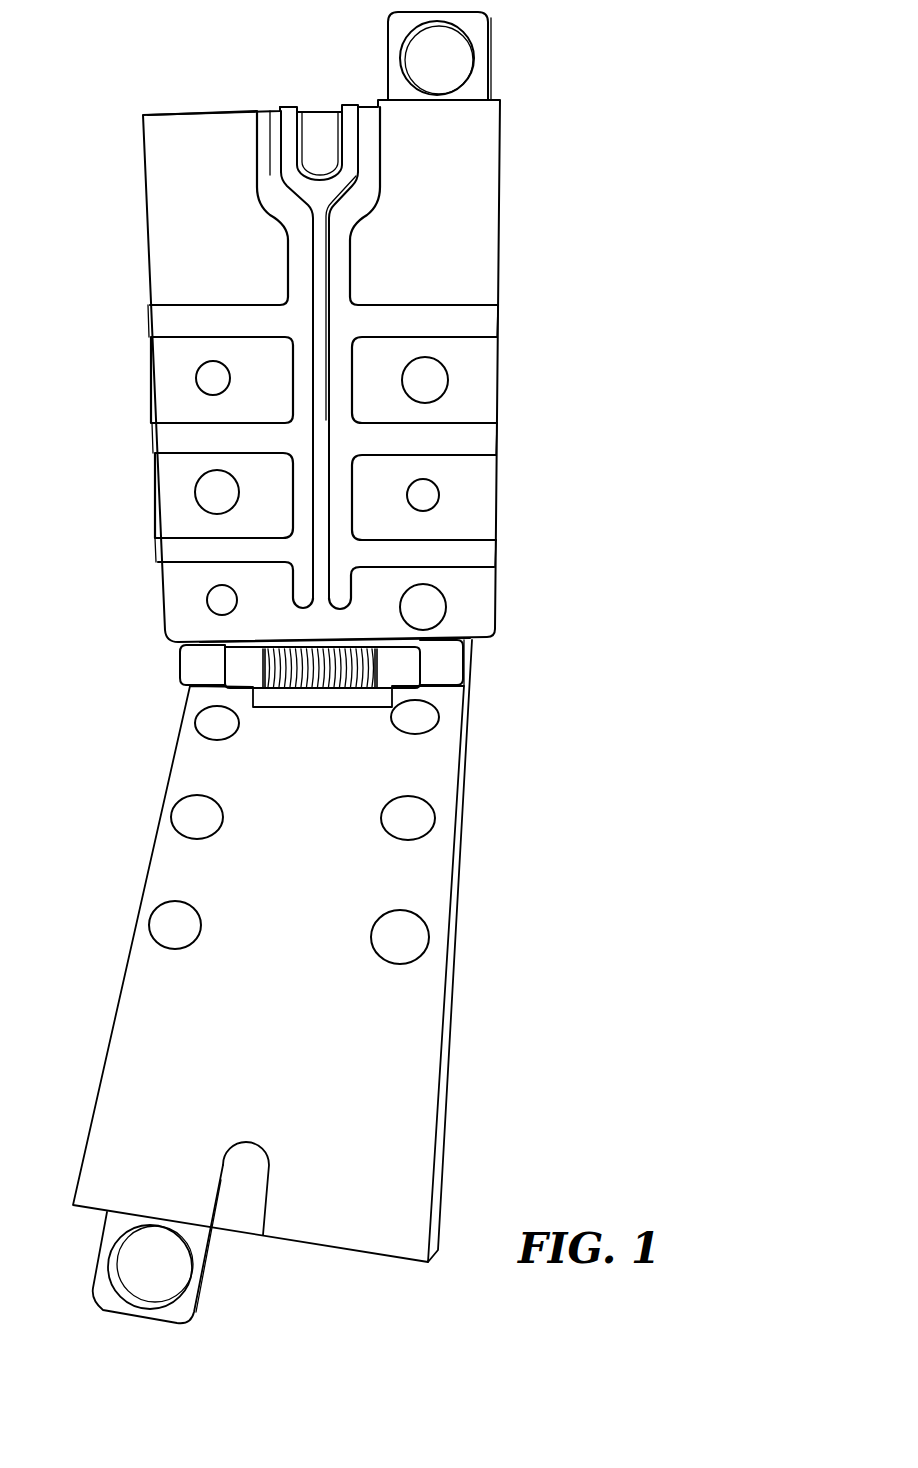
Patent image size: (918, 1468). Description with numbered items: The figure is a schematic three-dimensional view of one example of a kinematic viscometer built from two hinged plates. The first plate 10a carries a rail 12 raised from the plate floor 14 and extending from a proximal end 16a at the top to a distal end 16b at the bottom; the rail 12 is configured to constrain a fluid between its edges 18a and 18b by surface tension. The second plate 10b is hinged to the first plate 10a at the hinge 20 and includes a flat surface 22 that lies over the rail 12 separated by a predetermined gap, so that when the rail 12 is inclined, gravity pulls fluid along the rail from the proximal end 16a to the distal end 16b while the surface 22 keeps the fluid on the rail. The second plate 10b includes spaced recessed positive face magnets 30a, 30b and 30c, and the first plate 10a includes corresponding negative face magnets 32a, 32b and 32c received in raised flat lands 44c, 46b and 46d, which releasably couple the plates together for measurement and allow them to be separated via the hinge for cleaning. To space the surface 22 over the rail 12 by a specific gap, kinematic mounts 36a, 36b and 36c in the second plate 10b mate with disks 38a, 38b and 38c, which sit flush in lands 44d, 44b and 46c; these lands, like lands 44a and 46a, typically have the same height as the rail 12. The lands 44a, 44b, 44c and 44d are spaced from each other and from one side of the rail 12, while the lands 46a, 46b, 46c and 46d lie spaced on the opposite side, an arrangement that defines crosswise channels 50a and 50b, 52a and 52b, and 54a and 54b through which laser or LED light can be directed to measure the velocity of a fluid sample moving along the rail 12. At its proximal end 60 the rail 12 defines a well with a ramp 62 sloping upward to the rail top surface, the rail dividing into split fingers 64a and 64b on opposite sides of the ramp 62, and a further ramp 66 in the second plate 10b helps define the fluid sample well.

The first plate 10a is at (335, 327).
The second plate 10b is at (299, 981).
The rail 12 is at (322, 301).
The plate floor 14 is at (358, 453).
The proximal end 16a is at (470, 97).
The distal end 16b is at (325, 632).
The edge 18a is at (311, 263).
The edge 18b is at (331, 262).
The hinge 20 is at (180, 667).
The flat surface 22 is at (308, 1041).
The positive face magnet 30a is at (195, 815).
The positive face magnet 30b is at (405, 937).
The positive face magnet 30c is at (417, 717).
The negative face magnet 32a is at (208, 493).
The negative face magnet 32b is at (426, 383).
The negative face magnet 32c is at (428, 610).
The kinematic mount 36a is at (218, 721).
The kinematic mount 36b is at (172, 925).
The kinematic mount 36c is at (410, 818).
The disk 38a is at (220, 600).
The disk 38b is at (212, 378).
The disk 38c is at (425, 498).
The raised flat land 44a is at (207, 214).
The raised flat land 44b is at (276, 415).
The raised flat land 44c is at (277, 531).
The raised flat land 44d is at (284, 598).
The raised flat land 46a is at (463, 203).
The raised flat land 46b is at (393, 417).
The raised flat land 46c is at (396, 531).
The raised flat land 46d is at (396, 601).
The crosswise channel 50a is at (166, 324).
The crosswise channel 50b is at (479, 326).
The crosswise channel 52a is at (169, 439).
The crosswise channel 52b is at (472, 442).
The crosswise channel 54a is at (172, 548).
The crosswise channel 54b is at (473, 556).
The proximal end of rail 60 is at (273, 153).
The ramp 62 is at (322, 122).
The split finger 64a is at (292, 117).
The split finger 64b is at (352, 140).
The ramp 66 is at (256, 1201).